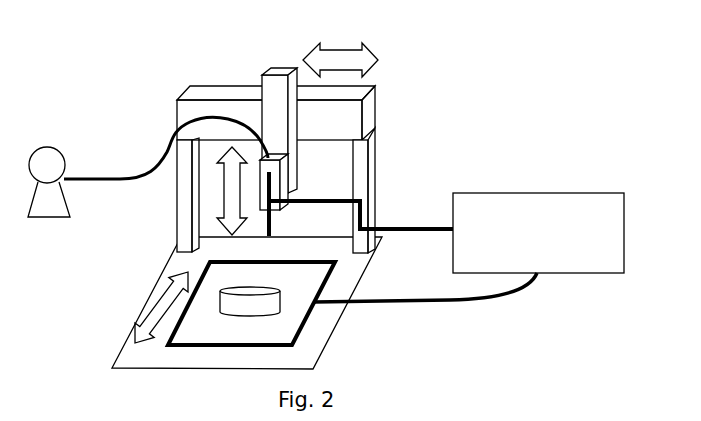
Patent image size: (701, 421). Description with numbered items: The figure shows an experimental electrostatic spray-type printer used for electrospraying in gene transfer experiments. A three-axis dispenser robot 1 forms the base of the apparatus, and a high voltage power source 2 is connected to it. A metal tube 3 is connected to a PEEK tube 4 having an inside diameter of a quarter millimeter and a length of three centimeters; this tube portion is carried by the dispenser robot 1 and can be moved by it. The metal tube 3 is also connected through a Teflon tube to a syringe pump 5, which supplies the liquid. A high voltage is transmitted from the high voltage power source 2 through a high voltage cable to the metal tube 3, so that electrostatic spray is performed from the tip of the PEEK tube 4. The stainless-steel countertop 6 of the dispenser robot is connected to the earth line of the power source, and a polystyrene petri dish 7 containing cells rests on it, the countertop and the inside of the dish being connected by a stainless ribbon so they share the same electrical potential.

The 3-axis dispenser robot 1 is at (344, 193).
The high voltage power source 2 is at (469, 247).
The metal tube 3 is at (267, 182).
The PEEK tube 4 is at (360, 204).
The syringe pump 5 is at (148, 176).
The stainless-steel countertop 6 is at (251, 303).
The polystyrene petri dish 7 is at (250, 302).